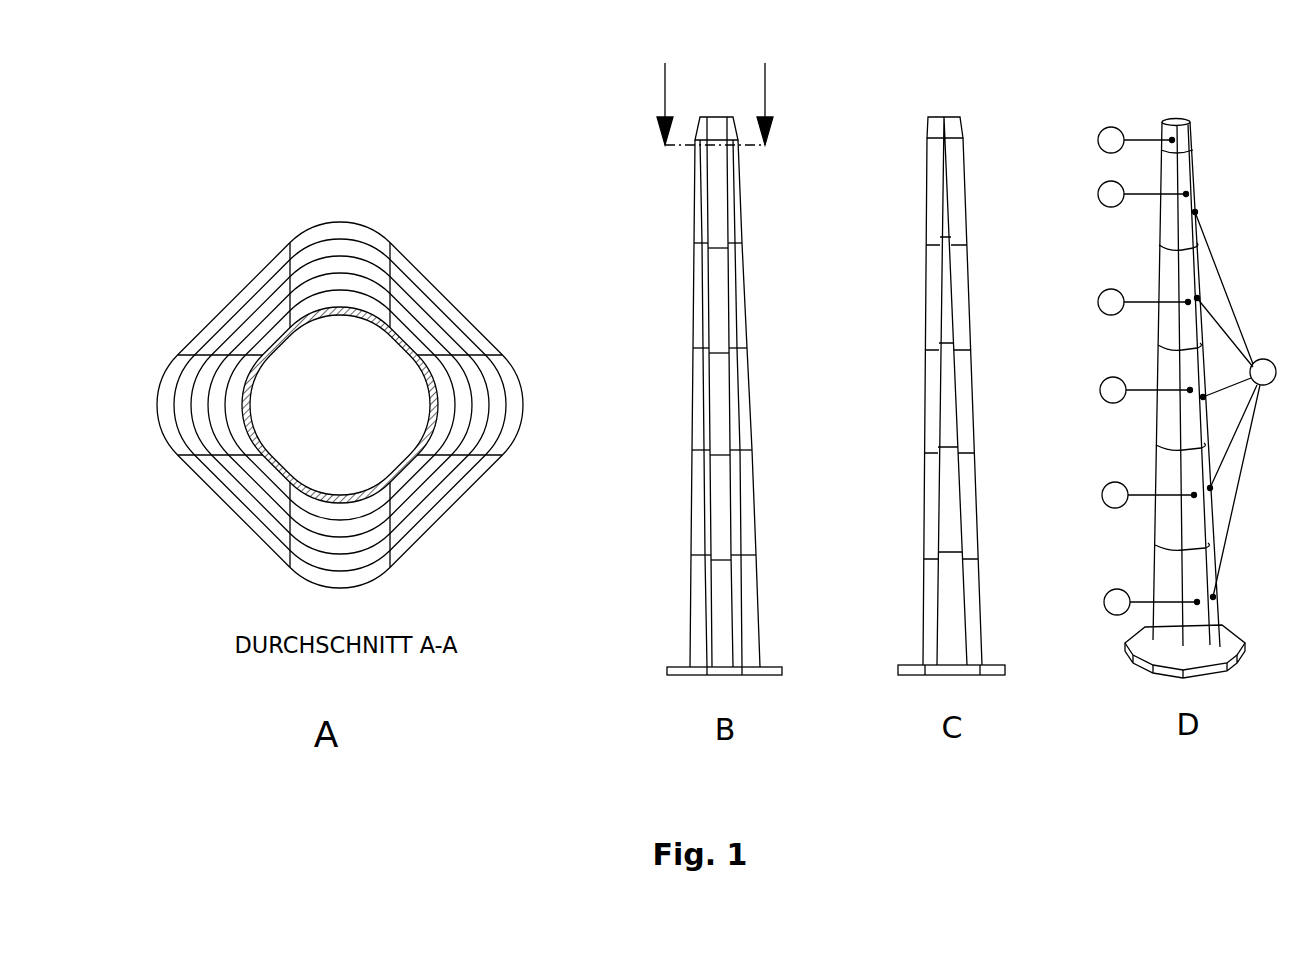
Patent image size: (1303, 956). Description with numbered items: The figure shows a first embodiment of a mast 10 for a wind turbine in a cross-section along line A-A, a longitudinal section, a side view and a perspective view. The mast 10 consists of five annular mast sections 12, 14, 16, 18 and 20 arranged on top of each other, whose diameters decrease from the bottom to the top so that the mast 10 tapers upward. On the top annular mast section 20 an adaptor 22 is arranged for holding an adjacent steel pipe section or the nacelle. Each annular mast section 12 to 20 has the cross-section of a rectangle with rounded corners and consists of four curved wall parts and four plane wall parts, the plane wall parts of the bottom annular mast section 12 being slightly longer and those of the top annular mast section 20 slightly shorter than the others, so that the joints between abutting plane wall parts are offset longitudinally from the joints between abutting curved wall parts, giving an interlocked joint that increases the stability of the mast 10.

In FIG. 1A, the mast 10 is at (370, 348).
In FIG. 1B, the mast 10 is at (749, 362).
In FIG. 1C, the mast 10 is at (955, 83).
In FIG. 1D, the mast 10 is at (1190, 105).
In FIG. 1A, the bottom annular mast section 12 is at (427, 292).
In FIG. 1B, the bottom annular mast section 12 is at (768, 603).
In FIG. 1A, the annular mast section 14 is at (440, 325).
In FIG. 1B, the annular mast section 14 is at (757, 502).
In FIG. 1A, the annular mast section 16 is at (445, 348).
In FIG. 1B, the annular mast section 16 is at (755, 400).
In FIG. 1A, the annular mast section 18 is at (458, 378).
In FIG. 1B, the annular mast section 18 is at (748, 306).
In FIG. 1A, the top annular mast section 20 is at (446, 405).
In FIG. 1B, the top annular mast section 20 is at (745, 210).
In FIG. 1B, the adaptor 22 is at (713, 118).